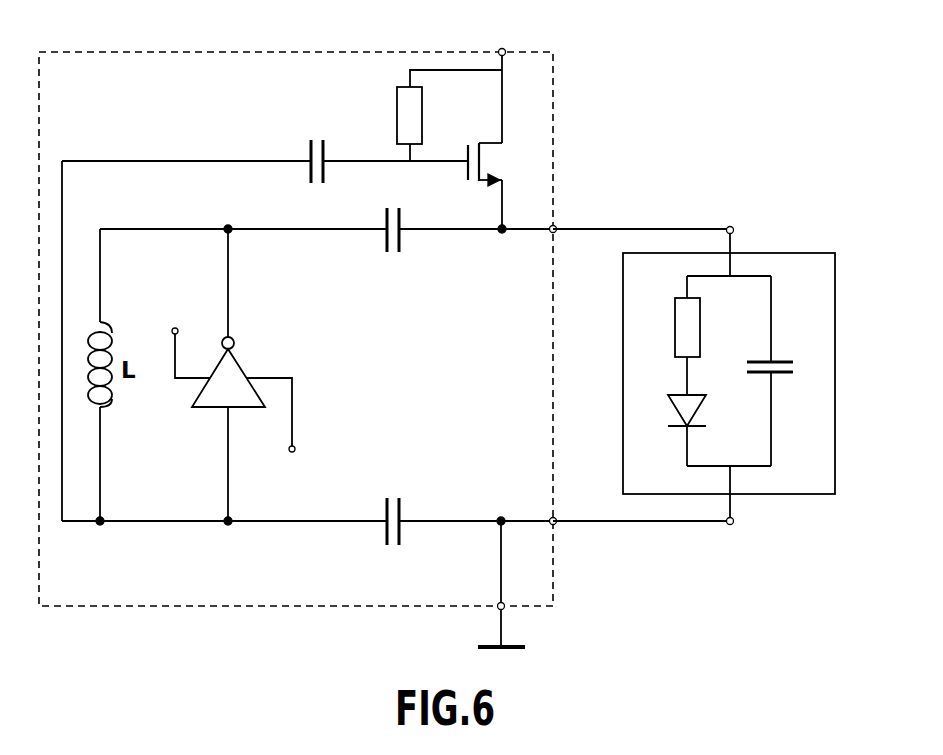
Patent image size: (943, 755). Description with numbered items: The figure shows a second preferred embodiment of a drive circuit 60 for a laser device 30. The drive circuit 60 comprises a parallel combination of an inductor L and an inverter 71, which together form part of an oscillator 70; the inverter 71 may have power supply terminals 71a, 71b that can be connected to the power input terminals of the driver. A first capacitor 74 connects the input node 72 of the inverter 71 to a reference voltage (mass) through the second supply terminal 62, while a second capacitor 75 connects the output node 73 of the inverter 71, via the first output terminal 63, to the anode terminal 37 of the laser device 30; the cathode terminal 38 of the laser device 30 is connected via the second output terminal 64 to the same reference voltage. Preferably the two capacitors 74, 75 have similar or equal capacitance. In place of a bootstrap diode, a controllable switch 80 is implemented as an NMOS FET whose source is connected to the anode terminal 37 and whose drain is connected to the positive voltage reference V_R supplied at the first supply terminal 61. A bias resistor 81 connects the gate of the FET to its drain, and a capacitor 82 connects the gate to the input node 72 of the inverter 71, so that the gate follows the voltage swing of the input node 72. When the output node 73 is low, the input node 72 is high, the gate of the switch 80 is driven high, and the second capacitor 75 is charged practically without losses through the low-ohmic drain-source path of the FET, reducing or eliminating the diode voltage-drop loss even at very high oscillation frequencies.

The drive circuit 60 is at (283, 51).
The first supply terminal 61 is at (507, 48).
The second supply terminal 62 is at (506, 609).
The first output terminal 63 is at (556, 225).
The second output terminal 64 is at (556, 524).
The oscillator 70 is at (725, 346).
The laser device 30 is at (836, 333).
The anode terminal 37 is at (735, 238).
The cathode terminal 38 is at (742, 505).
The inverter 71 is at (228, 375).
The power supply terminal 71a is at (186, 338).
The power supply terminal 71b is at (276, 429).
The input node 72 is at (228, 537).
The output node 73 is at (228, 215).
The first capacitor 74 is at (391, 506).
The second capacitor 75 is at (394, 243).
The controllable switch 80 is at (488, 164).
The bias resistor 81 is at (449, 115).
The capacitor 82 is at (316, 147).